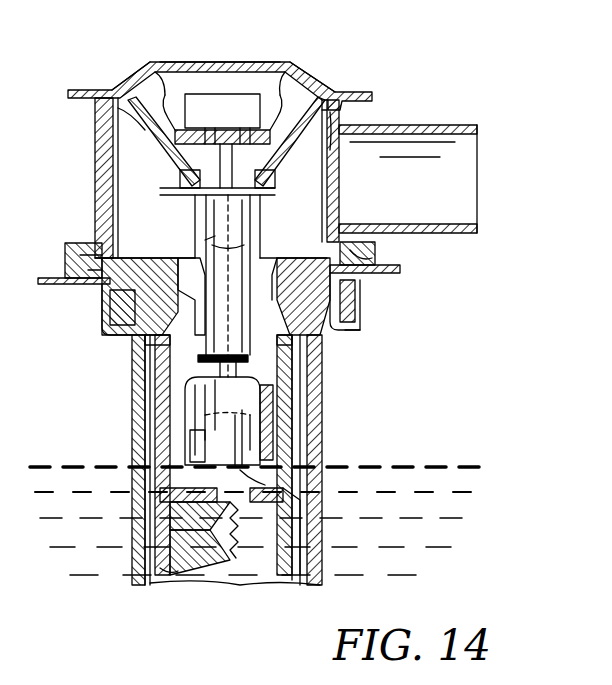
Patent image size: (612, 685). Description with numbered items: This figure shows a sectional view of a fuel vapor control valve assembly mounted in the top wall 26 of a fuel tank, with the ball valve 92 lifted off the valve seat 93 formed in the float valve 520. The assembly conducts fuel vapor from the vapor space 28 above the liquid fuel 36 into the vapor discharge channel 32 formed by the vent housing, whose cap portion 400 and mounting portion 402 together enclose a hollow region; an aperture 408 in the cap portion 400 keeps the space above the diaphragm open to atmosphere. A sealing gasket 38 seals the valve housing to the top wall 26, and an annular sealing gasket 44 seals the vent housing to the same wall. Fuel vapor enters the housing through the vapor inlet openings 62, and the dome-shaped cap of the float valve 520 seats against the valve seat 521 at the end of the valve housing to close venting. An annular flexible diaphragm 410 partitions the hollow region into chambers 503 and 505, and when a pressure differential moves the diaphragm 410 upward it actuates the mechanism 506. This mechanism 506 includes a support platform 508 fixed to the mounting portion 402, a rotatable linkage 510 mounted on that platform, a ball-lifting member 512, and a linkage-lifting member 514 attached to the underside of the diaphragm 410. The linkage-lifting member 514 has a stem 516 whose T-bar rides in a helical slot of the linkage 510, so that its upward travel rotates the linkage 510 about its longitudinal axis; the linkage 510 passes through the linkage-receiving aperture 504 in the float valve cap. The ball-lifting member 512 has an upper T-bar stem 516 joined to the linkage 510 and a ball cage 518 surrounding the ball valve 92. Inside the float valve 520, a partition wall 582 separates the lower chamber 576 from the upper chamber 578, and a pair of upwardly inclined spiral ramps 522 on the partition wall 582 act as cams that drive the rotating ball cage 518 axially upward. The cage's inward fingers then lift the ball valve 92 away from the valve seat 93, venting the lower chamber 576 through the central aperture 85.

The top wall 26 is at (55, 277).
The vapor space 28 is at (444, 347).
The vapor discharge channel 32 is at (426, 170).
The liquid fuel 36 is at (438, 562).
The sealing gasket 38 is at (345, 303).
The annular sealing gasket 44 is at (384, 268).
The vapor inlet openings 62 is at (140, 440).
The central aperture 85 is at (240, 492).
The ball valve 92 is at (282, 443).
The valve seat 93 is at (226, 437).
The cap portion 400 is at (267, 62).
The mounting portion 402 is at (100, 212).
The aperture 408 is at (186, 62).
The flexible diaphragm 410 is at (298, 82).
The chamber 503 is at (165, 82).
The linkage-receiving aperture 504 is at (247, 292).
The chamber 505 is at (112, 146).
The mechanism 506 is at (300, 165).
The support platform 508 is at (134, 155).
The rotatable linkage 510 is at (185, 232).
The ball-lifting member 512 is at (183, 413).
The linkage-lifting member 514 is at (172, 150).
The stem 516 is at (242, 168).
The ball cage 518 is at (262, 412).
The float valve 520 is at (172, 565).
The valve seat 521 is at (305, 352).
The spiral ramps 522 is at (318, 482).
The lower chamber 576 is at (228, 548).
The upper chamber 578 is at (150, 484).
The partition wall 582 is at (322, 494).